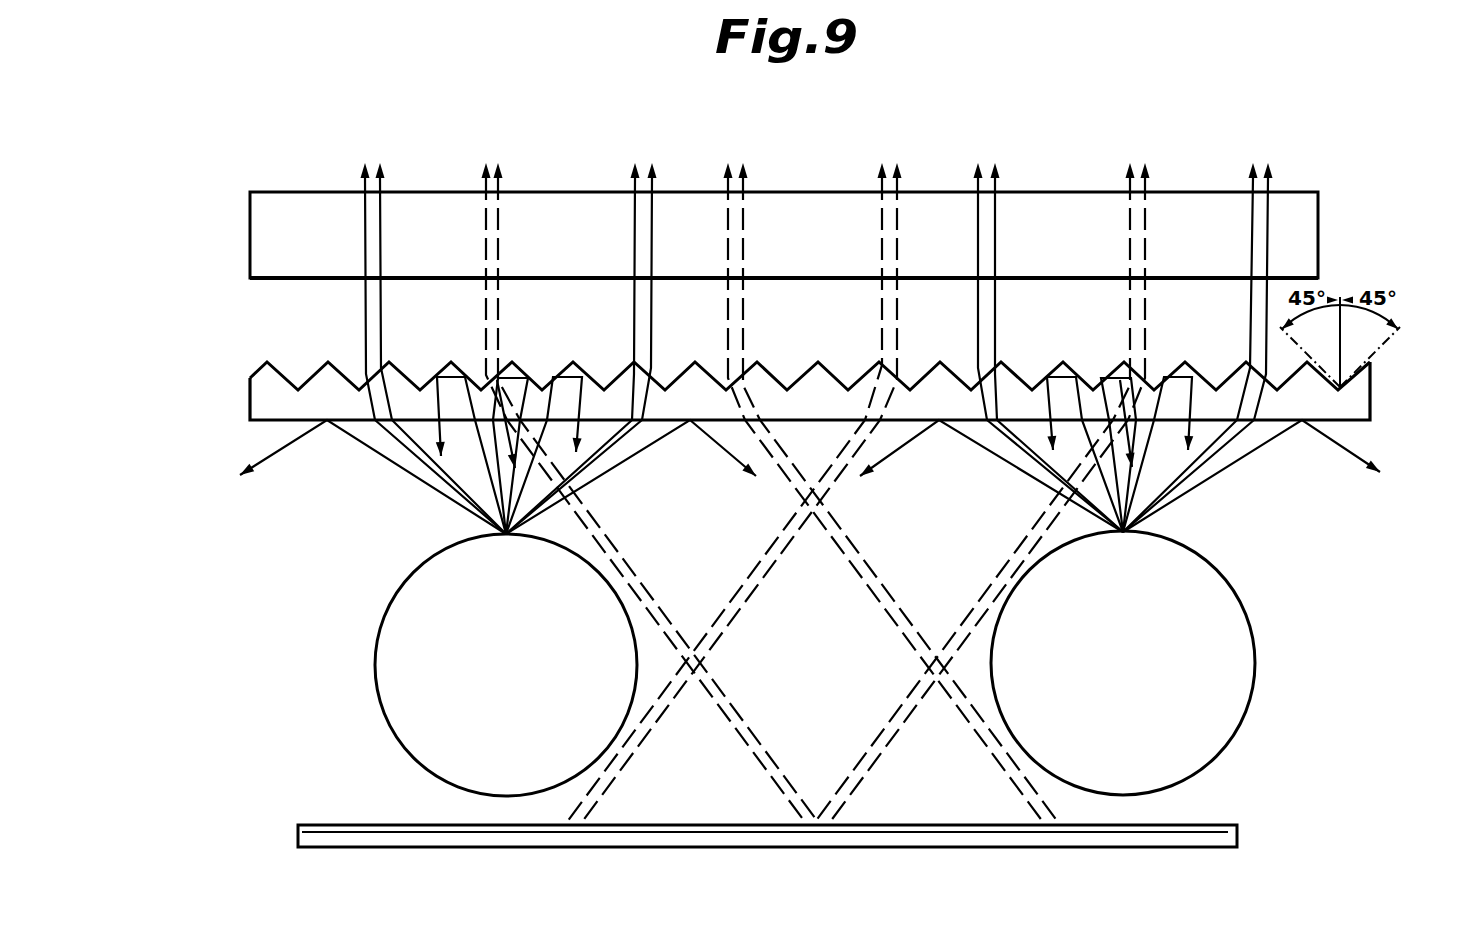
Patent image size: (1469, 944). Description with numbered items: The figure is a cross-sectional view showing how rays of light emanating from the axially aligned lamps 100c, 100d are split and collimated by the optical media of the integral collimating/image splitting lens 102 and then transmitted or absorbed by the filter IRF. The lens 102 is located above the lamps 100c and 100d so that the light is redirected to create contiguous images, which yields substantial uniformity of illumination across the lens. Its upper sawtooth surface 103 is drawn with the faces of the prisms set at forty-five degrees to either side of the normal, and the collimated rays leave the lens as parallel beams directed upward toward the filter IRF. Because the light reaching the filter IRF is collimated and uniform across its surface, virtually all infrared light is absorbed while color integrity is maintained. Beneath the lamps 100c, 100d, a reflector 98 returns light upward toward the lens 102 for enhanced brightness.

The IR filter IRF is at (257, 227).
The integral collimating/image splitting lens 102 is at (257, 405).
The sawtooth prism surface 103 is at (280, 370).
The lamp 100c is at (475, 695).
The lamp 100d is at (1093, 695).
The reflector 98 is at (1227, 828).